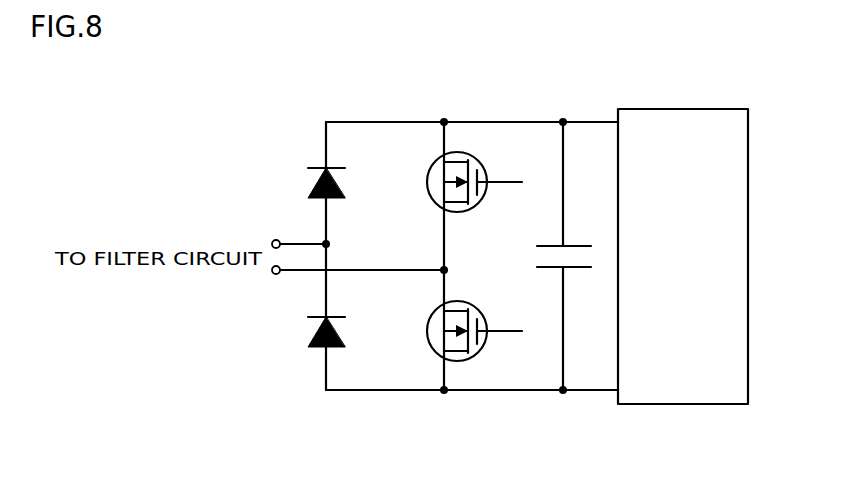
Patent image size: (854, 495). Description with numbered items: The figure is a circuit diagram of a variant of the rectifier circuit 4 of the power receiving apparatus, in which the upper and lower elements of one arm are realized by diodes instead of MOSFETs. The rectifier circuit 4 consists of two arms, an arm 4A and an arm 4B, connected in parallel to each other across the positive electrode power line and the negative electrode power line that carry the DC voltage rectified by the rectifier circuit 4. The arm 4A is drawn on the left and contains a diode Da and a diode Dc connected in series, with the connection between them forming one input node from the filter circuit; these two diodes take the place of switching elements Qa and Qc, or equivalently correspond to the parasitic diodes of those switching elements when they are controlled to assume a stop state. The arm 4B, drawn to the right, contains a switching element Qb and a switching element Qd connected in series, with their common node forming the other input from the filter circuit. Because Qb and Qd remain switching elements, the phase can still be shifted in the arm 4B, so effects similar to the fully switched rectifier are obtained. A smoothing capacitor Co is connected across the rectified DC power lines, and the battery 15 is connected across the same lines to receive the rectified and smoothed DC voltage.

The rectifier circuit 4 is at (437, 78).
The arm 4A is at (312, 150).
The arm 4B is at (430, 150).
The battery 15 is at (683, 109).
The diode Da is at (343, 181).
The diode Dc is at (343, 330).
The switching element Qb is at (472, 160).
The switching element Qd is at (472, 309).
The smoothing capacitor Co is at (580, 244).